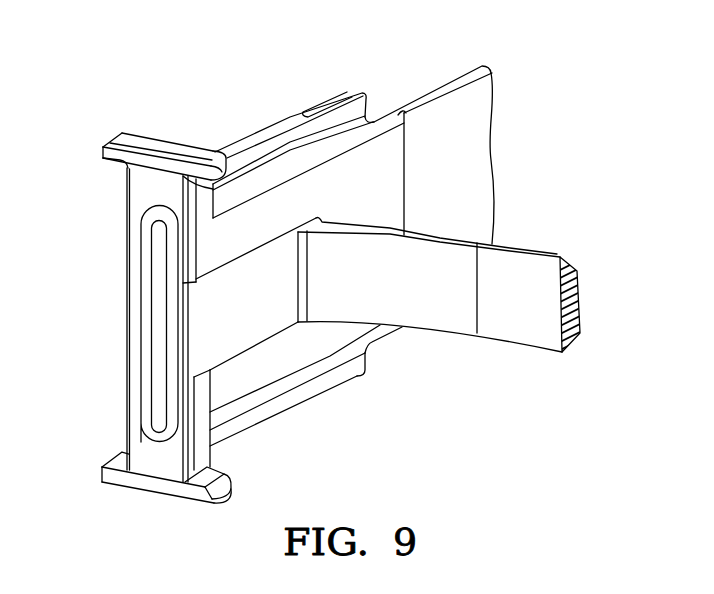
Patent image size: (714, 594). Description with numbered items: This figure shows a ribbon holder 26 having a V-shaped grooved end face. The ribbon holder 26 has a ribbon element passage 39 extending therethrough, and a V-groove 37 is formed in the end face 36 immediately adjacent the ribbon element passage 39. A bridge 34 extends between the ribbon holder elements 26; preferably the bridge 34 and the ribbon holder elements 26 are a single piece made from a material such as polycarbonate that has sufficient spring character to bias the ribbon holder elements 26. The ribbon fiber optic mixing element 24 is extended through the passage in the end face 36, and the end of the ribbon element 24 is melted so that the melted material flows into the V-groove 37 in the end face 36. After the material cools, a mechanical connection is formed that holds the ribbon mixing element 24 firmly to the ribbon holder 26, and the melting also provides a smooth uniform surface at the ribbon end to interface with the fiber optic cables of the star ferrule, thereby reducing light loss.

The ribbon fiber optic mixing element 24 is at (465, 78).
The ribbon holder 26 is at (250, 142).
The bridge 34 is at (540, 268).
The end face 36 is at (137, 187).
The V-groove 37 is at (152, 237).
The ribbon element passage 39 is at (158, 418).